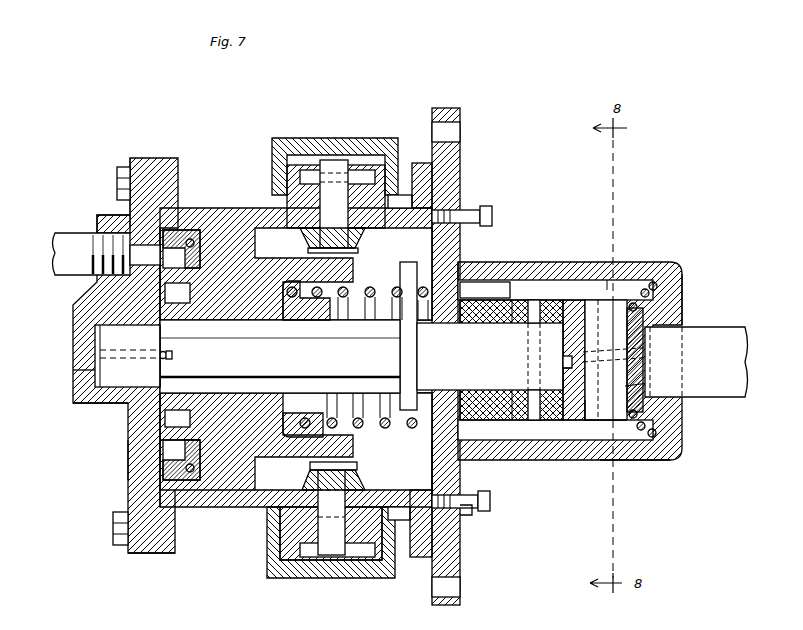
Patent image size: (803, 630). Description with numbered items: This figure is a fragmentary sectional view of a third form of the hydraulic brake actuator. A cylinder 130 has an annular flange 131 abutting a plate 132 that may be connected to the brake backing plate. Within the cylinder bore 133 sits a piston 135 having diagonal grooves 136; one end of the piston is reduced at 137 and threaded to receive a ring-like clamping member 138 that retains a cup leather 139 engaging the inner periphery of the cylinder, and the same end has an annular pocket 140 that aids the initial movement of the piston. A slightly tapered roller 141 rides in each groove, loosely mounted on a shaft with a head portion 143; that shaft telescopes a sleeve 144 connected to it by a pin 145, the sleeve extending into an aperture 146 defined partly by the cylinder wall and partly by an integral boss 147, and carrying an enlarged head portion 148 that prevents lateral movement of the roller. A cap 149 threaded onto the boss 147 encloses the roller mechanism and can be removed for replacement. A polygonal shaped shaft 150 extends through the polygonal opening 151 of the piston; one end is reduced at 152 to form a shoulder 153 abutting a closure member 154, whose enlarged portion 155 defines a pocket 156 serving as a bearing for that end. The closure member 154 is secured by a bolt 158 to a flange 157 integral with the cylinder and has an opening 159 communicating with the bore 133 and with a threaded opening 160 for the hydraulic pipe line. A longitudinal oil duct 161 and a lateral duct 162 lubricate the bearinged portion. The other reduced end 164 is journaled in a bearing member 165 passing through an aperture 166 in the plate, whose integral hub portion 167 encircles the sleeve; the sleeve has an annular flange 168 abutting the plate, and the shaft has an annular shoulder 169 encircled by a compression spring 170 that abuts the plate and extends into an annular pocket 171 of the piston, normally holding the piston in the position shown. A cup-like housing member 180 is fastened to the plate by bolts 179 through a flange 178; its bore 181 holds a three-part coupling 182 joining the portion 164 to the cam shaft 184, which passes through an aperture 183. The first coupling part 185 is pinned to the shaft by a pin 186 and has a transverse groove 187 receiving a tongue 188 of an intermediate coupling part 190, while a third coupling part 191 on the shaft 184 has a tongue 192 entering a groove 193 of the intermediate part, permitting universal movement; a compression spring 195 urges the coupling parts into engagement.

The cylinder 130 is at (228, 508).
The annular flange 131 is at (425, 546).
The plate 132 is at (461, 552).
The cylinder bore 133 is at (460, 462).
The piston 135 is at (235, 492).
The diagonal grooves 136 is at (256, 215).
The reduced end 137 is at (165, 442).
The clamping member 138 is at (165, 462).
The cup leather 139 is at (190, 231).
The annular pocket 140 is at (165, 293).
The roller 141 is at (302, 232).
The head portion 143 is at (340, 162).
The sleeve 144 is at (405, 195).
The pin 145 is at (300, 177).
The aperture 146 is at (420, 165).
The boss 147 is at (290, 190).
The head portion 148 is at (322, 162).
The cap 149 is at (366, 140).
The polygonal shaped shaft 150 is at (160, 366).
The opening 151 is at (262, 322).
The reduced end 152 is at (95, 378).
The shoulder 153 is at (126, 406).
The closure member 154 is at (128, 449).
The enlarged portion 155 is at (76, 306).
The pocket 156 is at (100, 352).
The flange 157 is at (158, 554).
The bolt 158 is at (118, 170).
The opening 159 is at (128, 253).
The threaded opening 160 is at (104, 217).
The longitudinal oil duct 161 is at (97, 330).
The lateral duct 162 is at (172, 355).
The reduced portion 164 is at (510, 300).
The bearing member 165 is at (462, 326).
The aperture 166 is at (463, 266).
The hub portion 167 is at (506, 300).
The annular flange 168 is at (421, 290).
The annular shoulder 169 is at (408, 426).
The compression spring 170 is at (378, 282).
The annular pocket 171 is at (345, 298).
The flange 178 is at (472, 510).
The bolts 179 is at (486, 206).
The cup-like housing member 180 is at (655, 461).
The bore 181 is at (604, 423).
The coupling 182 is at (622, 283).
The aperture 183 is at (683, 306).
The shaft 184 is at (729, 330).
The first coupling part 185 is at (610, 283).
The pin 186 is at (536, 300).
The transverse groove 187 is at (565, 368).
The tongue 188 is at (563, 360).
The intermediate coupling part 190 is at (592, 423).
The third coupling part 191 is at (670, 378).
The tongue 192 is at (645, 373).
The groove 193 is at (634, 353).
The compression spring 195 is at (660, 281).